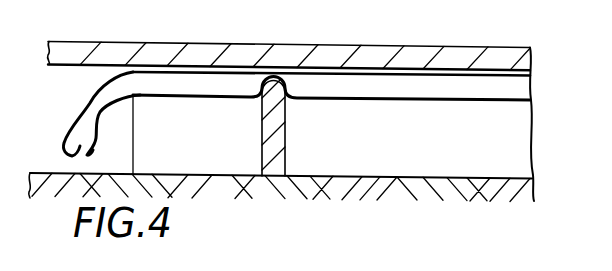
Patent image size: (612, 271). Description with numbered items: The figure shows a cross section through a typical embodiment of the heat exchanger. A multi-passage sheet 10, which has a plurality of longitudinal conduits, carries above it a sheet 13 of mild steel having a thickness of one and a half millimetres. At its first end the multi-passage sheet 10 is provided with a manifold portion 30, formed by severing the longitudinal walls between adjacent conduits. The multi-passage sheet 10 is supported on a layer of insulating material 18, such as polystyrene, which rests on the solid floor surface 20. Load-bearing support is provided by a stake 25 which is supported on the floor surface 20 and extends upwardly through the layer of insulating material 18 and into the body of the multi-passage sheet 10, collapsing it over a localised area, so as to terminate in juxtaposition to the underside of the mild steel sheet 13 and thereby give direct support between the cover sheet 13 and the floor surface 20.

The sheet of mild steel 13 is at (203, 56).
The multi-passage sheet 10 is at (407, 81).
The layer of insulating material 18 is at (441, 152).
The stake 25 is at (278, 140).
The manifold portion 30 is at (75, 128).
The floor surface 20 is at (333, 188).